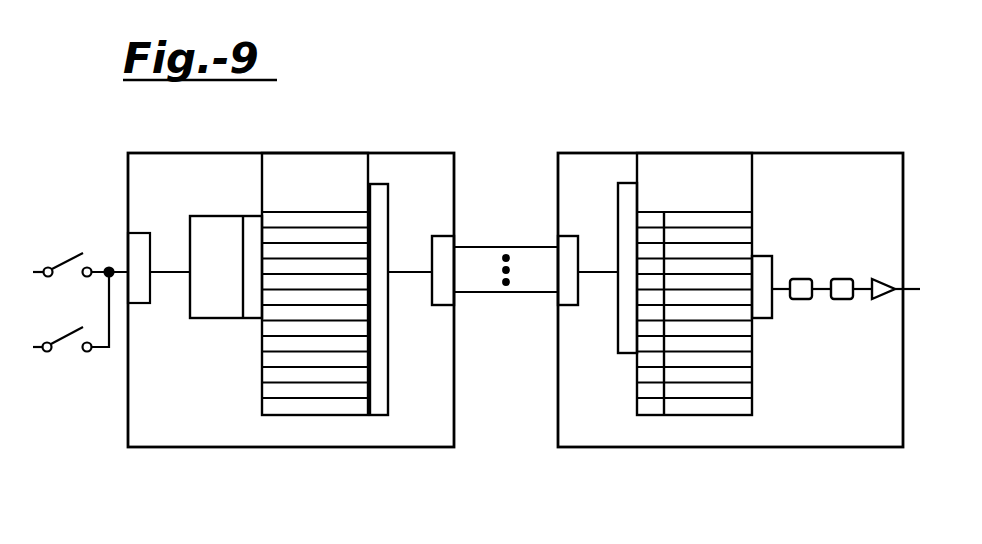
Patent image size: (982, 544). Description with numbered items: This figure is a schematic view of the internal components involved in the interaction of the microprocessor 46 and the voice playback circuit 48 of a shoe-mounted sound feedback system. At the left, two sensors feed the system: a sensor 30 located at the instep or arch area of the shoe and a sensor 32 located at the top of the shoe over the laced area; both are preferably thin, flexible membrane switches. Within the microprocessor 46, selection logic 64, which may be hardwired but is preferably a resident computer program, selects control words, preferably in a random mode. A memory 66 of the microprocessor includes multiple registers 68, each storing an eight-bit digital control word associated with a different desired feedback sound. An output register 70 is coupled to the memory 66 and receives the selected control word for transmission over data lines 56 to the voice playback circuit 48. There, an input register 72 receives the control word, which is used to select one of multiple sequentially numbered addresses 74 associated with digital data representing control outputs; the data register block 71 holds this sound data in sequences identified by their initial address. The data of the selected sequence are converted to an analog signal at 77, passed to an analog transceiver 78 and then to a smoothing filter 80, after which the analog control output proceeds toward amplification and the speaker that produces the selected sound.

The sensor 30 is at (45, 268).
The sensor 32 is at (48, 352).
The microprocessor 46 is at (192, 432).
The voice playback circuit 48 is at (850, 432).
The data lines 56 is at (488, 293).
The selection logic 64 is at (212, 319).
The memory 66 is at (309, 182).
The registers 68 is at (320, 417).
The output register 70 is at (447, 235).
The input register 72 is at (569, 235).
The addresses 74 is at (635, 408).
The second magazine 71 is at (693, 417).
The analog converter 77 is at (803, 278).
The analog transceiver 78 is at (842, 278).
The smoothing filter 80 is at (883, 280).